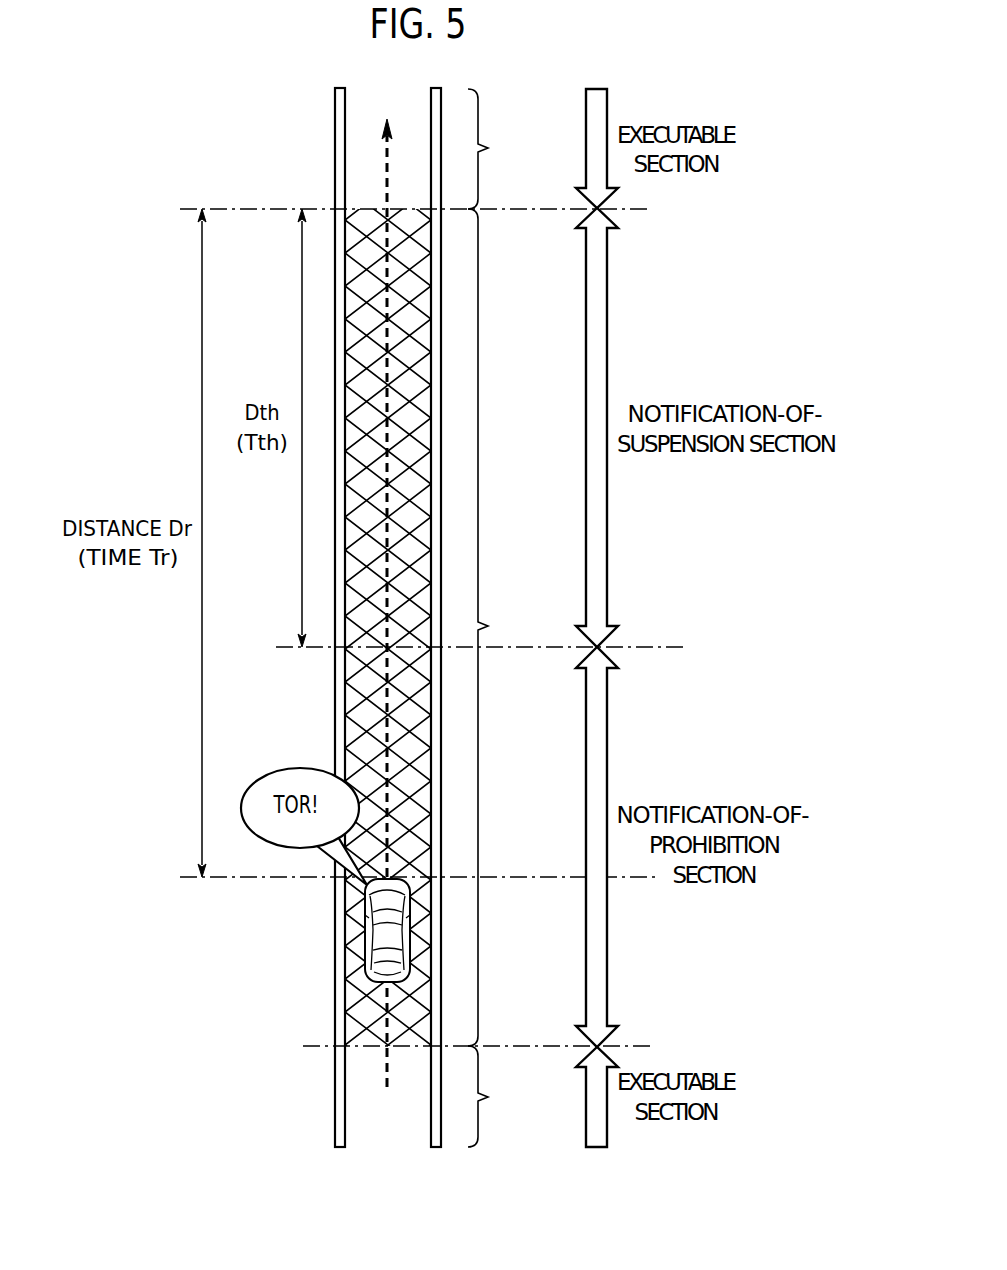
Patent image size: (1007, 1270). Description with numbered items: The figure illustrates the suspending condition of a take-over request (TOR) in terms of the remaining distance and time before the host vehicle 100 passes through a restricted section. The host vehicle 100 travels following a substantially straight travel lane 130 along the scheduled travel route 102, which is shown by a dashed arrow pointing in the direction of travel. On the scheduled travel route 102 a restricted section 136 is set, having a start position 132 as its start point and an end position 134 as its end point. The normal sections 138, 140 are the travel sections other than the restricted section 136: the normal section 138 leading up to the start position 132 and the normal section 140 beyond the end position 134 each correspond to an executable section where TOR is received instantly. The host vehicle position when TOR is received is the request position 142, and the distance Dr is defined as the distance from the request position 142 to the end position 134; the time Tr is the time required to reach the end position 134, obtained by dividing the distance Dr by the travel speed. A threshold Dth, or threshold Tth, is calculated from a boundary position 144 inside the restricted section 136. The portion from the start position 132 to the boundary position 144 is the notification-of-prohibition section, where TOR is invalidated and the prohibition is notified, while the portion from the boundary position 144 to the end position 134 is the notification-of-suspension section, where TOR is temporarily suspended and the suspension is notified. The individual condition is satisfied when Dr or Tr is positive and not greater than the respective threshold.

The host vehicle 100 is at (364, 938).
The scheduled travel route 102 is at (385, 152).
The travel lane 130 is at (393, 1110).
The start position 132 is at (318, 1050).
The end position 134 is at (250, 207).
The restricted section 136 is at (497, 627).
The normal section 138 is at (498, 1096).
The normal section 140 is at (498, 149).
The request position 142 is at (245, 882).
The boundary position 144 is at (285, 652).